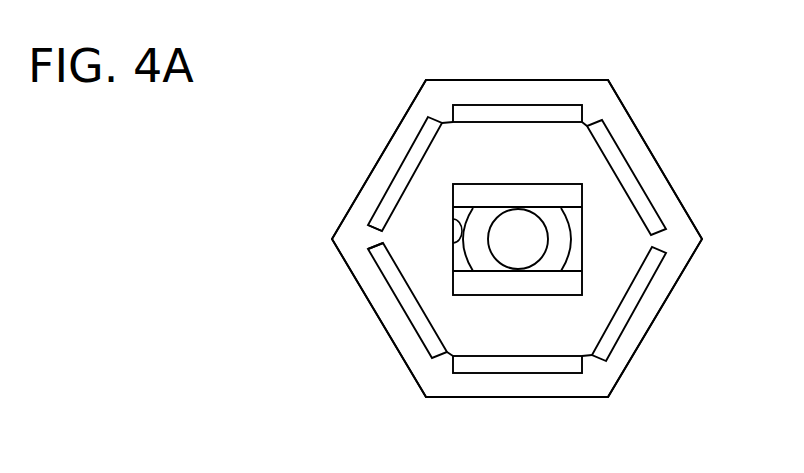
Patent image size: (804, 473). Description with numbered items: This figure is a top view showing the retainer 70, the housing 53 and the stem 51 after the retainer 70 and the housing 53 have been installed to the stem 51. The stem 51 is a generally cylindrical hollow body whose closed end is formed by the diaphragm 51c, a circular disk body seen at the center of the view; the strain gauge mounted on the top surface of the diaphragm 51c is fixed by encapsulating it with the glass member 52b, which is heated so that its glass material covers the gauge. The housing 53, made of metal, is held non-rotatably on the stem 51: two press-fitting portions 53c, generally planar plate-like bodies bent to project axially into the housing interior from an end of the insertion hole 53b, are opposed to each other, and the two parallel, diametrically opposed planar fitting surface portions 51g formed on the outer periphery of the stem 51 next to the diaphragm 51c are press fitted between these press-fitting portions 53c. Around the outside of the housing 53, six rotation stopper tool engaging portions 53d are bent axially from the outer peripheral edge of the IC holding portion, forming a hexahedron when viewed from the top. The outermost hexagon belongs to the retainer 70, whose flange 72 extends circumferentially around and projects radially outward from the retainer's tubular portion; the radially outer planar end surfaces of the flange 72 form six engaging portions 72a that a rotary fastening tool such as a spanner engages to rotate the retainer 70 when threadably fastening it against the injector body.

The retainer 70 is at (510, 241).
The flange 72 is at (362, 292).
The engaging portions 72a is at (403, 114).
The housing 53 is at (500, 241).
The insertion hole 53b is at (453, 241).
The press-fitting portions 53c is at (548, 184).
The rotation stopper tool engaging portions 53d is at (518, 105).
The stem 51 is at (541, 241).
The diaphragm 51c is at (558, 257).
The fitting surface portions 51g is at (499, 207).
The glass member 52b is at (533, 232).